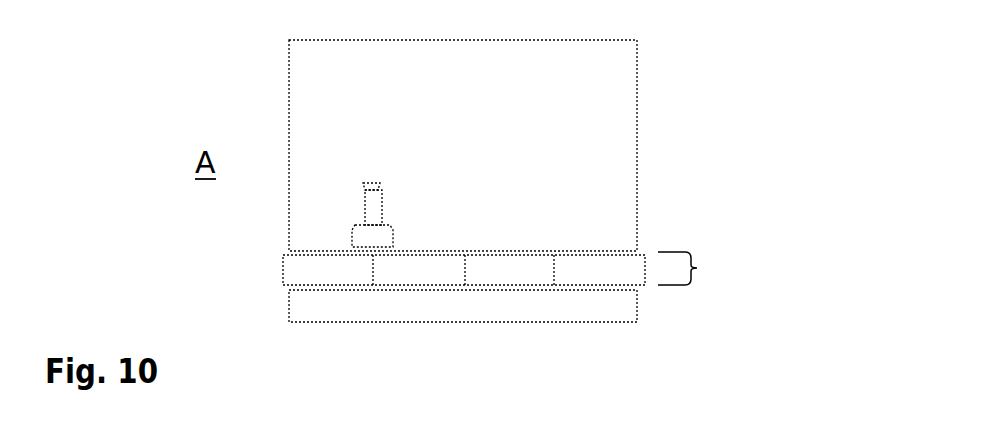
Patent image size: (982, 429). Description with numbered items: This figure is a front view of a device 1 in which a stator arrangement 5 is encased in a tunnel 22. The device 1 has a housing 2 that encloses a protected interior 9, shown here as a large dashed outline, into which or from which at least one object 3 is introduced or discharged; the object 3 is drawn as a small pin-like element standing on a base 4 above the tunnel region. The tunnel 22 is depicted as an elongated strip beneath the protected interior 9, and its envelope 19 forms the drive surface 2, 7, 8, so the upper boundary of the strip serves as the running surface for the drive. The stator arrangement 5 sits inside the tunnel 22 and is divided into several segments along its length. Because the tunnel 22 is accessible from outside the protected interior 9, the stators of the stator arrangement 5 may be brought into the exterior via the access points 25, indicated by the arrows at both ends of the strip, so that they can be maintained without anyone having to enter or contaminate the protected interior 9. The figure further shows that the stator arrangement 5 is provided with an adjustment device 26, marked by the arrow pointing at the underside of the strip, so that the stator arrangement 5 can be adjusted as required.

The device 1 is at (514, 129).
The housing 2 is at (503, 246).
The object 3 is at (372, 202).
The sensor base 4 is at (368, 234).
The stator arrangement 5 is at (334, 273).
The drive surface 7 is at (503, 246).
The drive surface 8 is at (503, 246).
The protected interior 9 is at (608, 103).
The envelope 19 is at (620, 247).
The tunnel 22 is at (697, 268).
The access points 25 is at (258, 274).
The adjustment device 26 is at (358, 295).